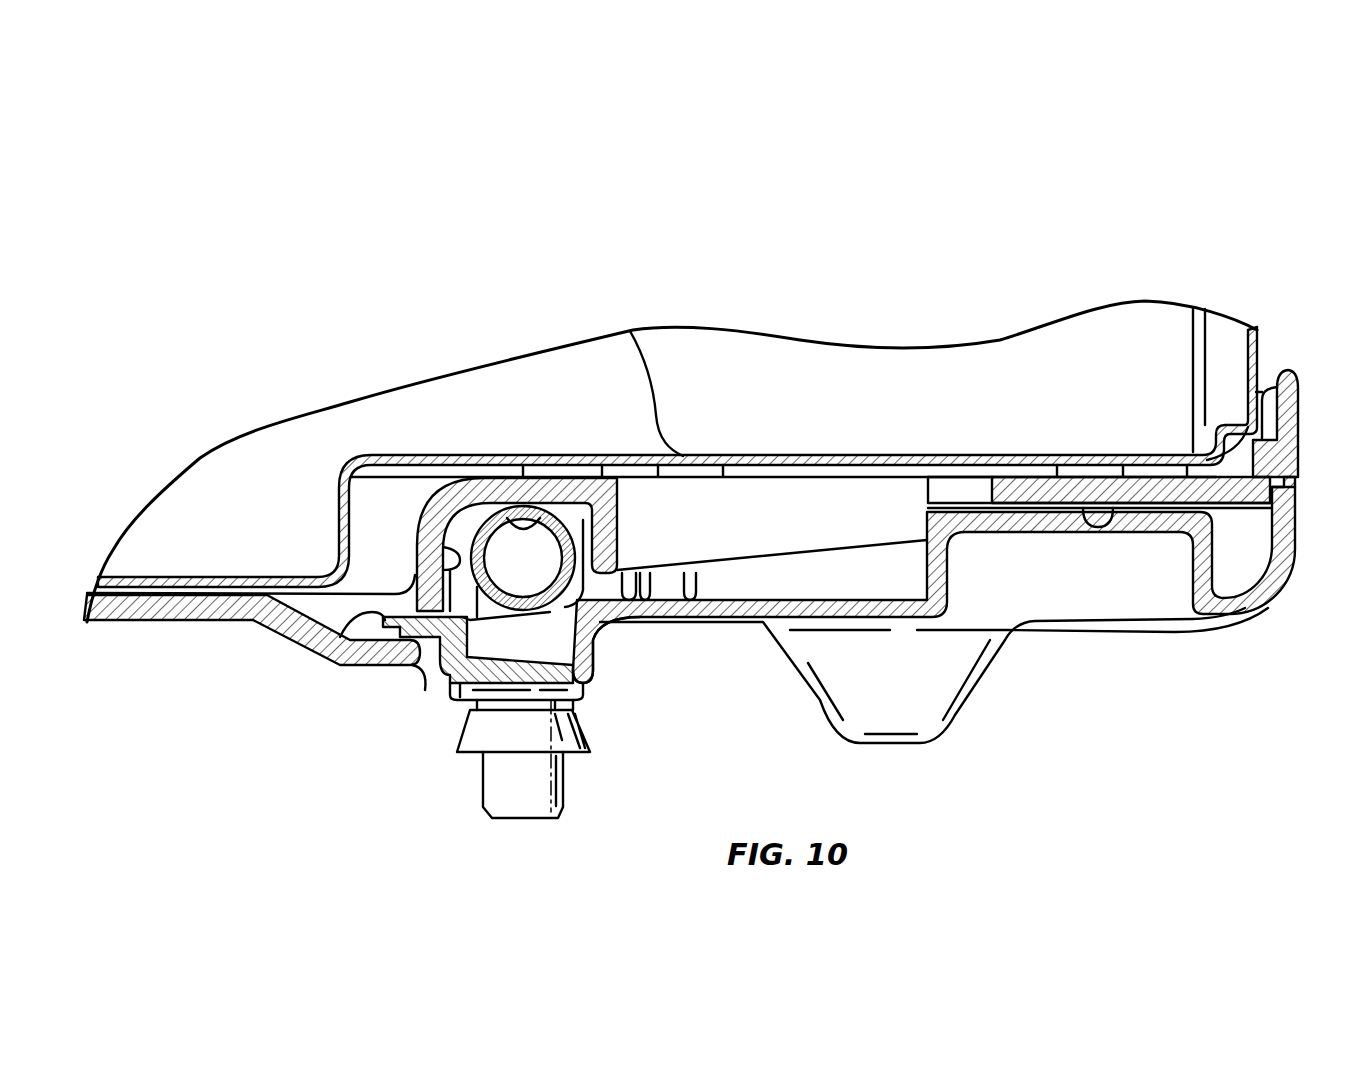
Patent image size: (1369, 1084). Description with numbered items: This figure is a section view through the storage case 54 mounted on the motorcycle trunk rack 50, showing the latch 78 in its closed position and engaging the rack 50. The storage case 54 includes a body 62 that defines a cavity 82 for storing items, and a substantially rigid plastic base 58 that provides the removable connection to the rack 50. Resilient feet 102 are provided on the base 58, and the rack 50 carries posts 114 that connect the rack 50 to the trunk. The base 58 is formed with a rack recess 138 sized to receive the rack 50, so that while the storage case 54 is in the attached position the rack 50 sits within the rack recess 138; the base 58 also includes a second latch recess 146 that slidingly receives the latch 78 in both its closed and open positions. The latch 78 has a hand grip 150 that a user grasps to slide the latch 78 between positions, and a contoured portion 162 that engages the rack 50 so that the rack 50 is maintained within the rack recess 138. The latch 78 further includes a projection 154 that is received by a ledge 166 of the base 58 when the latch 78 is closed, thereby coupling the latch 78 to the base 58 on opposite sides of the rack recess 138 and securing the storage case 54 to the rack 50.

The storage case 54 is at (822, 280).
The base 58 is at (1293, 393).
The body 62 is at (1252, 345).
The latch 78 is at (1287, 557).
The cavity 82 is at (204, 537).
The rack 50 is at (553, 510).
The resilient feet 102 is at (903, 715).
The posts 114 is at (543, 773).
The rack recess 138 is at (476, 532).
The second latch recess 146 is at (1093, 522).
The hand grip 150 is at (1190, 577).
The projection 154 is at (325, 650).
The contoured portion 162 is at (547, 620).
The ledge 166 is at (423, 665).